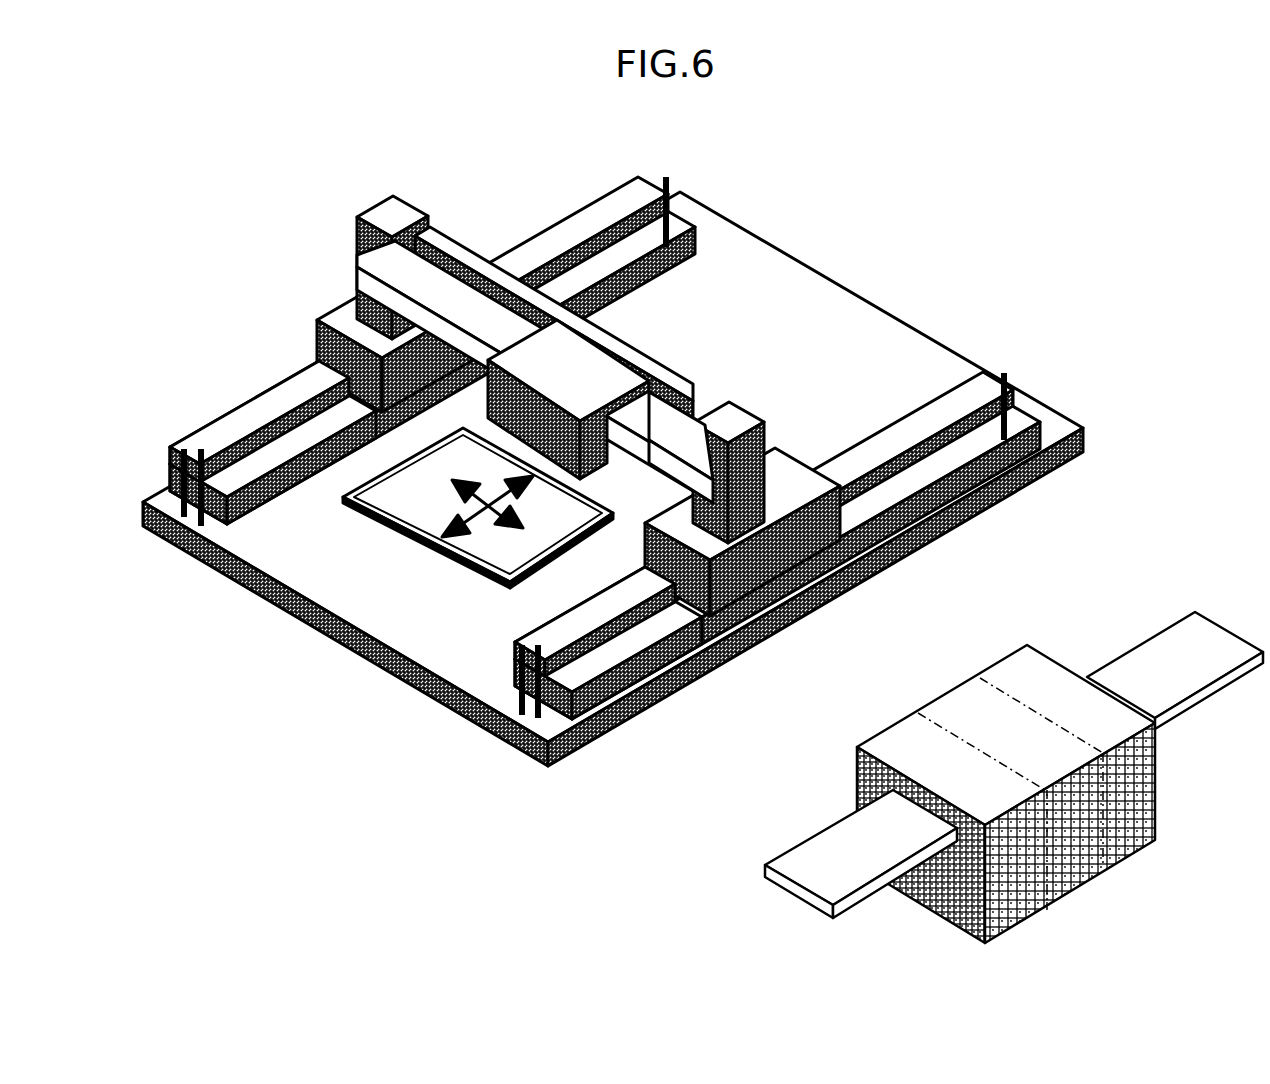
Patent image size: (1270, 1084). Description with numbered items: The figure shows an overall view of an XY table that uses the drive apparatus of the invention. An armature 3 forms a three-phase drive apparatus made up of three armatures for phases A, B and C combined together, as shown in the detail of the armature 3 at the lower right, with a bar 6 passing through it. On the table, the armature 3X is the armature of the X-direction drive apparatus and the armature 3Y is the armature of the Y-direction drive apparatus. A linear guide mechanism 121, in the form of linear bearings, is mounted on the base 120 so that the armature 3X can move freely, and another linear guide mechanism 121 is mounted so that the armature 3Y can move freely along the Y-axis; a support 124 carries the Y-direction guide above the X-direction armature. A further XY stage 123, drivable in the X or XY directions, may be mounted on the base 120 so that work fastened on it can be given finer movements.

The base 120 is at (390, 623).
The linear guide mechanism 121 is at (245, 478).
The magnet bar / stator rail 6 is at (355, 266).
The armature of X-direction drive apparatus 3X is at (328, 315).
The armature of Y-direction drive apparatus 3Y is at (575, 357).
The support column 124 is at (375, 212).
The XY stage 123 is at (493, 578).
The armature 3 is at (980, 670).